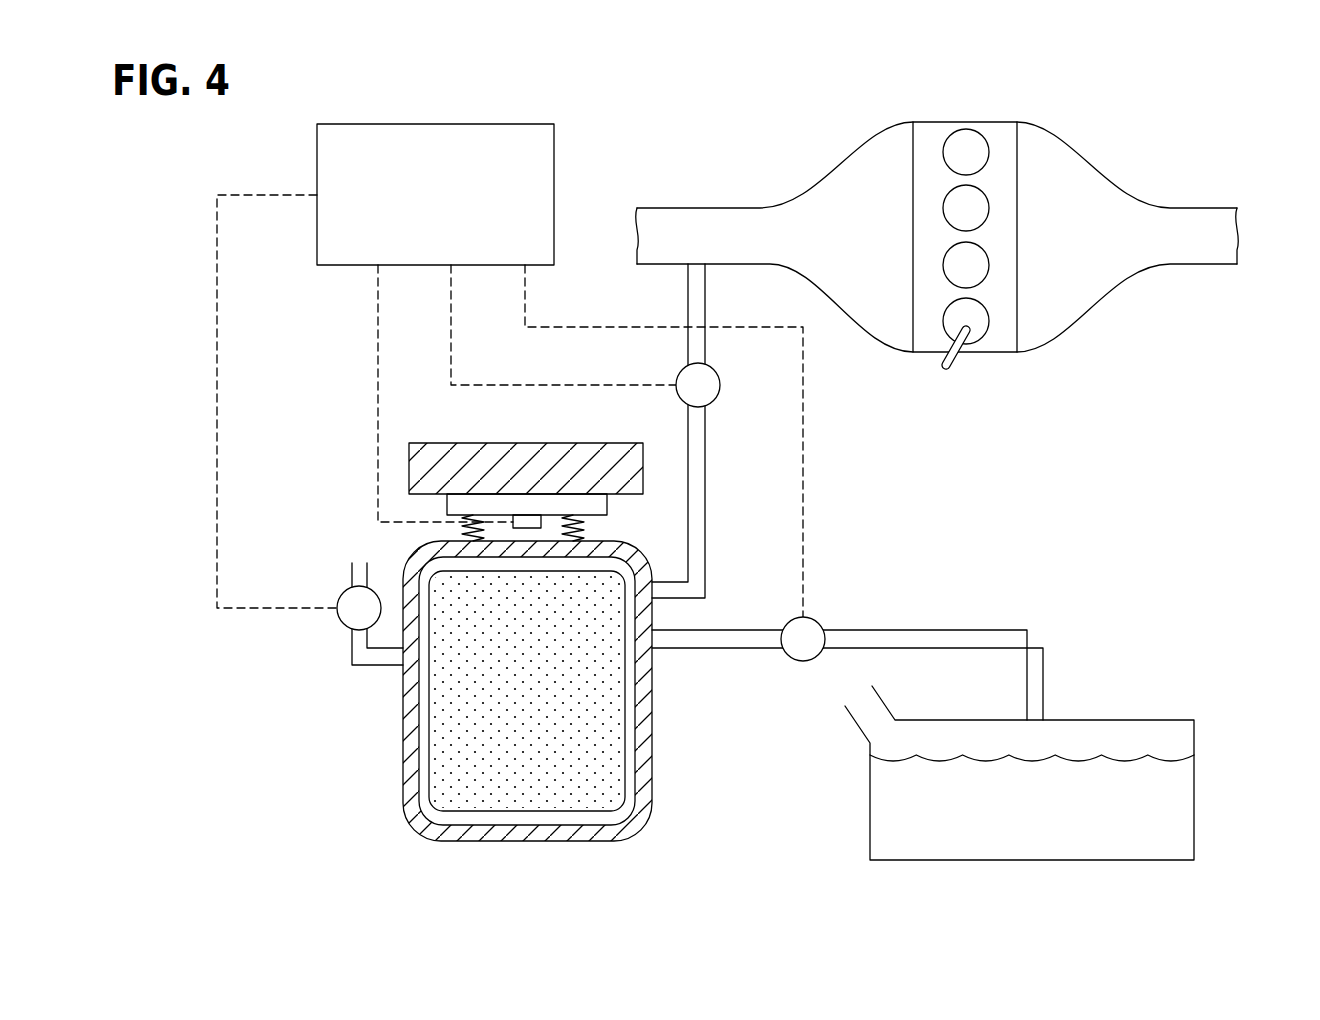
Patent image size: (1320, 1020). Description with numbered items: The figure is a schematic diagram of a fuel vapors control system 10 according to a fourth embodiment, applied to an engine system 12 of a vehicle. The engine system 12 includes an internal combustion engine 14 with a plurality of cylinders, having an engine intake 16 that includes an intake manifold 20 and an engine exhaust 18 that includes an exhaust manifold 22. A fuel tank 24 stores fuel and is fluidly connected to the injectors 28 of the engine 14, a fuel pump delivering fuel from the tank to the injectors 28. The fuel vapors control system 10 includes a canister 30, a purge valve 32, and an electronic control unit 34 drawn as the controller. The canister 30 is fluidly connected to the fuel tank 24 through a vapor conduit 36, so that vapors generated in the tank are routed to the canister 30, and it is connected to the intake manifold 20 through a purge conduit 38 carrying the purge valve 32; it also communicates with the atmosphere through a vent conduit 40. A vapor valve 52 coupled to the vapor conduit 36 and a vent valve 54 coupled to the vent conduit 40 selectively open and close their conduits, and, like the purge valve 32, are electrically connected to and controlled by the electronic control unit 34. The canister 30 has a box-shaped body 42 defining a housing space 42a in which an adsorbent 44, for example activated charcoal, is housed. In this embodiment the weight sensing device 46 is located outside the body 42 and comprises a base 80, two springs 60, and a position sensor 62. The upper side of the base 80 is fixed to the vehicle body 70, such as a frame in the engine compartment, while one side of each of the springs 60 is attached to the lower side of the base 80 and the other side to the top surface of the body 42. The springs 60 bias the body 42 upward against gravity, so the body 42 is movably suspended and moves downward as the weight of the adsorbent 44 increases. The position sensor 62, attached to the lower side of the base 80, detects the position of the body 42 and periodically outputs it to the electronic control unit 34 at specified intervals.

The fuel vapors control system 10 is at (395, 104).
The engine system 12 is at (937, 239).
The internal combustion engine 14 is at (1042, 124).
The engine intake 16 is at (866, 146).
The engine exhaust 18 is at (1068, 147).
The intake manifold 20 is at (862, 300).
The exhaust manifold 22 is at (1060, 316).
The fuel tank 24 is at (1196, 787).
The injectors 28 is at (962, 364).
The canister 30 is at (563, 708).
The purge valve 32 is at (720, 374).
The electronic control unit 34 is at (553, 124).
The vapor conduit 36 is at (983, 630).
The purge conduit 38 is at (707, 468).
The vent conduit 40 is at (372, 666).
The body 42 is at (521, 842).
The housing space 42a is at (640, 815).
The adsorbent 44 is at (605, 677).
The weight sensing device 46 is at (539, 472).
The vapor valve 52 is at (818, 623).
The vent valve 54 is at (345, 625).
The springs 60 is at (470, 535).
The position sensor 62 is at (525, 520).
The vehicle body 70 is at (631, 452).
The base 80 is at (483, 502).